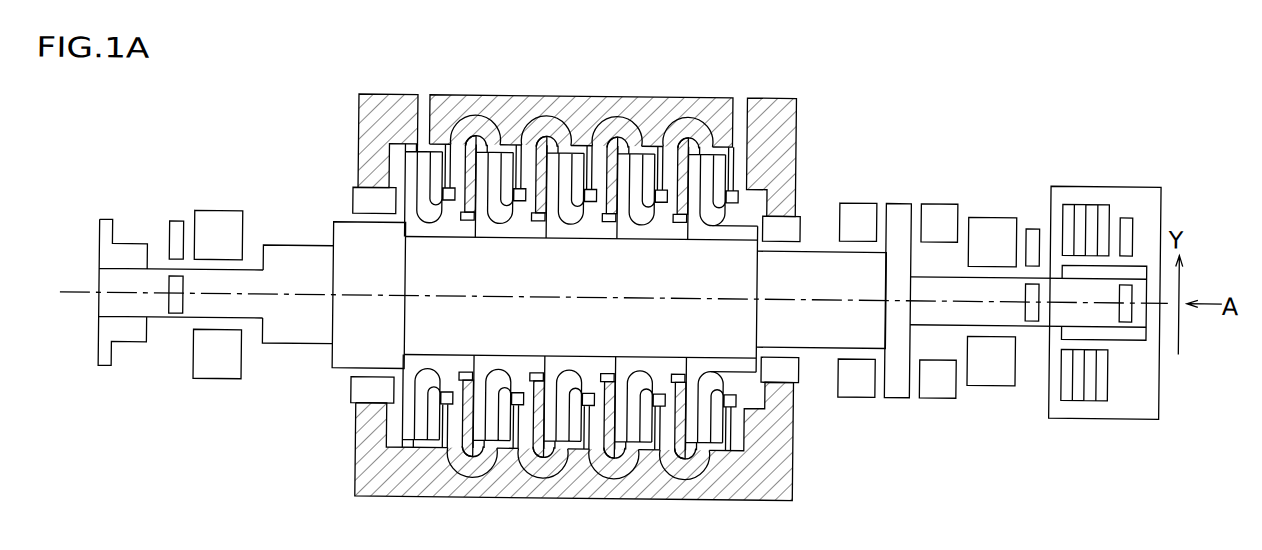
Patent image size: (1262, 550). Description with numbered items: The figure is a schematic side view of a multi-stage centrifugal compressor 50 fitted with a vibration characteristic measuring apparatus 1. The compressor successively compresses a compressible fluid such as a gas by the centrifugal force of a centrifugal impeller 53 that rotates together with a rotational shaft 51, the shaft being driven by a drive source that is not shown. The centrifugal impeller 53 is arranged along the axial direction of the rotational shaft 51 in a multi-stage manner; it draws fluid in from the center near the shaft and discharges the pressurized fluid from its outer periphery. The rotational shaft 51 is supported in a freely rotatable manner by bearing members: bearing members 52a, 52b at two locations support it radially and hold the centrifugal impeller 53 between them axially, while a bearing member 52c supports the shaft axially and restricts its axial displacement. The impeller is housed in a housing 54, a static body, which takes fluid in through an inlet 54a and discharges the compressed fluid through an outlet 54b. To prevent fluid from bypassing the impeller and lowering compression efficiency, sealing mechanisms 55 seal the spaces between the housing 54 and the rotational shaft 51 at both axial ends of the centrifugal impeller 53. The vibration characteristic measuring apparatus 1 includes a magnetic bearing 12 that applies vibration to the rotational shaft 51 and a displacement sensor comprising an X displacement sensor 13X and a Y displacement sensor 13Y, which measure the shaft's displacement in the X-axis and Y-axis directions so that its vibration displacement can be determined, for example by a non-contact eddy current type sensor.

The vibration characteristic measuring apparatus 1 is at (1112, 179).
The magnetic bearing 12 is at (1082, 197).
The X displacement sensor 13X is at (1134, 307).
The Y displacement sensor 13Y is at (1125, 210).
The multi-stage centrifugal compressor 50 is at (685, 54).
The rotational shaft 51 is at (101, 288).
The bearing member 52a is at (213, 211).
The bearing member 52b is at (992, 211).
The bearing member 52c is at (928, 197).
The centrifugal impeller 53 is at (527, 98).
The housing 54 is at (781, 94).
The inlet 54a is at (742, 94).
The outlet 54b is at (423, 94).
The sealing mechanism 55 is at (689, 180).